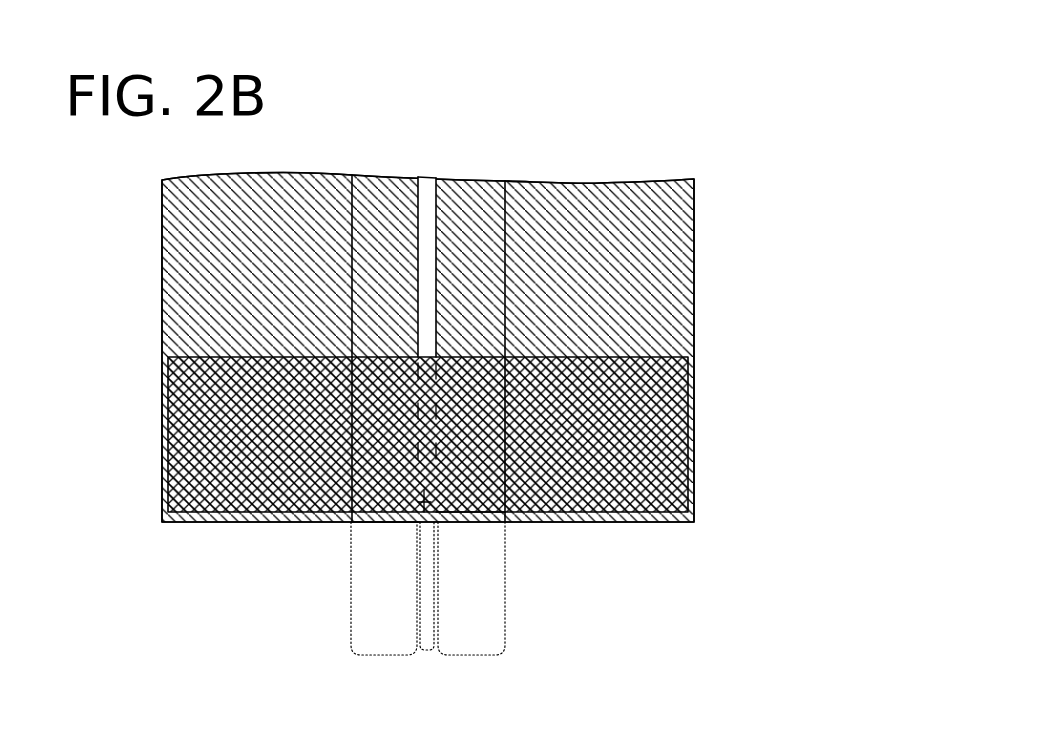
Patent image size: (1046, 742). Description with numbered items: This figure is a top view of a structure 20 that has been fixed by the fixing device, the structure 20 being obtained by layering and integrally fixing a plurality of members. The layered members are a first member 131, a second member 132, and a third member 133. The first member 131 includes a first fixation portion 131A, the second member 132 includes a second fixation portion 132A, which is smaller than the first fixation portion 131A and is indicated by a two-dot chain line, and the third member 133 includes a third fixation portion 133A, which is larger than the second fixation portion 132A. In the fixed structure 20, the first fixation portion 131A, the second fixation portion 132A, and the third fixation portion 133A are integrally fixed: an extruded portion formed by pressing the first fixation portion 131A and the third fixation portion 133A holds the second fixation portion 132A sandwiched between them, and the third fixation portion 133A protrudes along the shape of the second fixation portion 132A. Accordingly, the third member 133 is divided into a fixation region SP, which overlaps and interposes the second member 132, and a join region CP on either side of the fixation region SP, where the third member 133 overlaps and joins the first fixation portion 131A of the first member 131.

The structure 20 is at (728, 140).
The first member 131 is at (528, 200).
The second member 132 is at (428, 193).
The third member 133 is at (675, 413).
The first fixation portion 131A is at (372, 513).
The second fixation portion 132A is at (423, 503).
The third fixation portion 133A is at (492, 497).
The join region CP is at (426, 607).
The fixation region SP is at (426, 602).